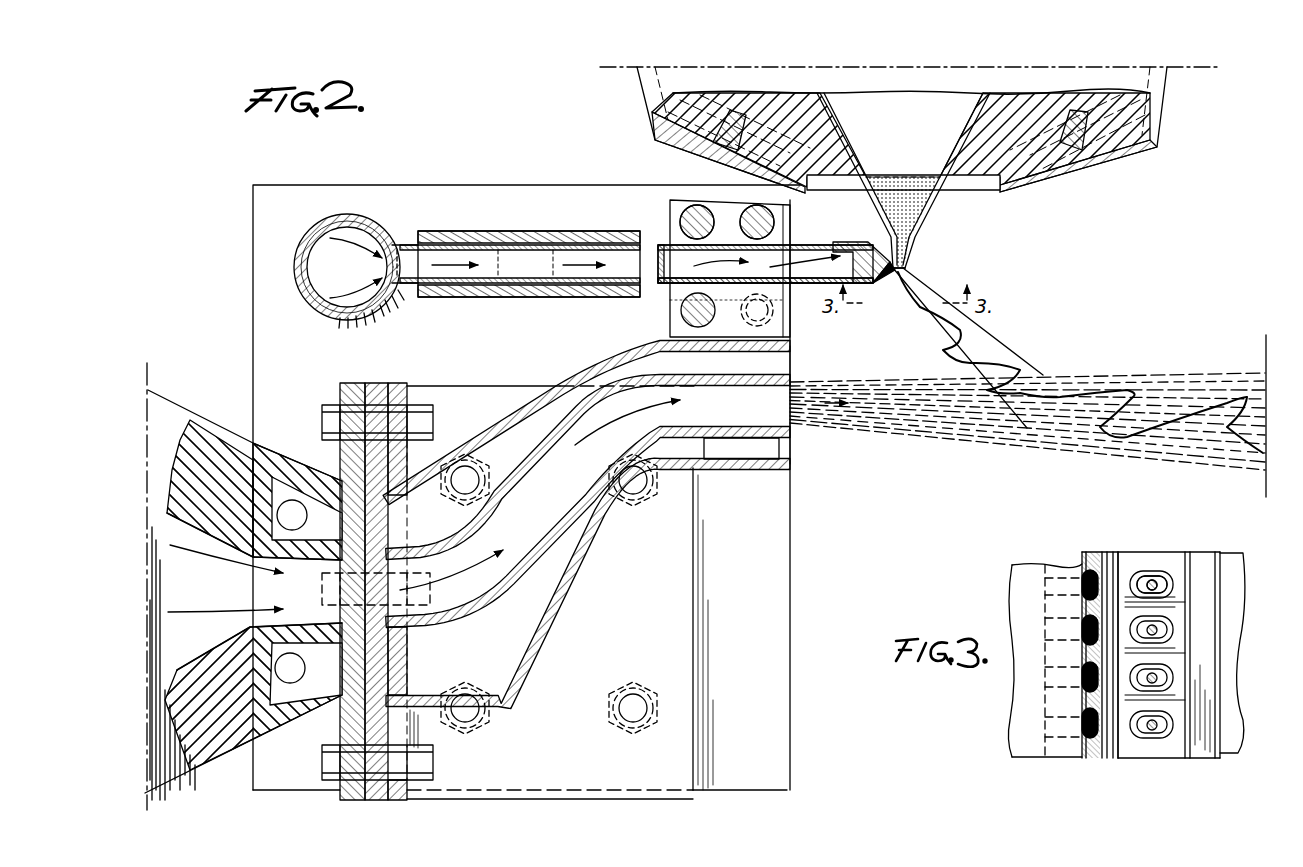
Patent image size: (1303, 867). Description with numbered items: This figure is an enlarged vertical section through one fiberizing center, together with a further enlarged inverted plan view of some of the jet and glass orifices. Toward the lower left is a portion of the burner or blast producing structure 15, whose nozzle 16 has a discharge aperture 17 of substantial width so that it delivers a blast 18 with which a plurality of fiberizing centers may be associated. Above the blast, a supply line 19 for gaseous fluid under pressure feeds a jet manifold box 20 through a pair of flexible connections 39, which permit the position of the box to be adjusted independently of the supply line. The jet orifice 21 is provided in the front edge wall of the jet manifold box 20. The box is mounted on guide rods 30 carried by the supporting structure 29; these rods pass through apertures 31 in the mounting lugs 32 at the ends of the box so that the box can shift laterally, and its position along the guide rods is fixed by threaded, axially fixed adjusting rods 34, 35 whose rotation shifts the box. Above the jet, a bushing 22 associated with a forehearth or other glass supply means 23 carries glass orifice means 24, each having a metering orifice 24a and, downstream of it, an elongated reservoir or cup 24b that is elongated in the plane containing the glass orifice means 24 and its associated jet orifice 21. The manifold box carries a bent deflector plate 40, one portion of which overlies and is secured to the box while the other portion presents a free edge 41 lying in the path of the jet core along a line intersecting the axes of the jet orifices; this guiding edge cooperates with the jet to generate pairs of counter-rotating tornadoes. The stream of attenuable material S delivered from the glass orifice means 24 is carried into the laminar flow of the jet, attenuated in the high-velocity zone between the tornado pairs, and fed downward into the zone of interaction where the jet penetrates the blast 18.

In FIG. 2, the burner or blast producing structure 15 is at (190, 772).
In FIG. 2, the nozzle 16 is at (570, 597).
In FIG. 2, the discharge aperture 17 is at (745, 420).
In FIG. 2, the blast 18 is at (898, 427).
In FIG. 2, the supply line 19 is at (337, 217).
In FIG. 2, the jet manifold box 20 is at (660, 243).
In FIG. 3, the jet manifold box 20 is at (1030, 760).
In FIG. 2, the jet orifice 21 is at (848, 283).
In FIG. 3, the jet orifice 21 is at (1085, 632).
In FIG. 2, the bushing 22 is at (913, 232).
In FIG. 3, the bushing 22 is at (1200, 760).
In FIG. 2, the forehearth or glass supply means 23 is at (1172, 87).
In FIG. 3, the forehearth or glass supply means 23 is at (1228, 560).
In FIG. 2, the glass orifice means 24 is at (910, 242).
In FIG. 3, the glass orifice means 24 is at (1154, 575).
In FIG. 2, the metering orifice 24a is at (899, 215).
In FIG. 3, the metering orifice 24a is at (1148, 580).
In FIG. 2, the reservoir or cup 24b is at (913, 250).
In FIG. 3, the reservoir or cup 24b is at (1160, 578).
In FIG. 2, the supporting structure 29 is at (253, 293).
In FIG. 2, the guide rod 30 is at (745, 212).
In FIG. 2, the aperture 31 is at (692, 214).
In FIG. 2, the mounting lug 32 is at (778, 332).
In FIG. 2, the adjusting rod 34 is at (772, 318).
In FIG. 2, the adjusting rod 35 is at (683, 311).
In FIG. 2, the flexible connection 39 is at (527, 231).
In FIG. 2, the deflector plate 40 is at (885, 258).
In FIG. 3, the deflector plate 40 is at (1106, 762).
In FIG. 2, the free edge 41 is at (886, 272).
In FIG. 3, the free edge 41 is at (1105, 553).
In FIG. 2, the stream of attenuable material S is at (906, 279).